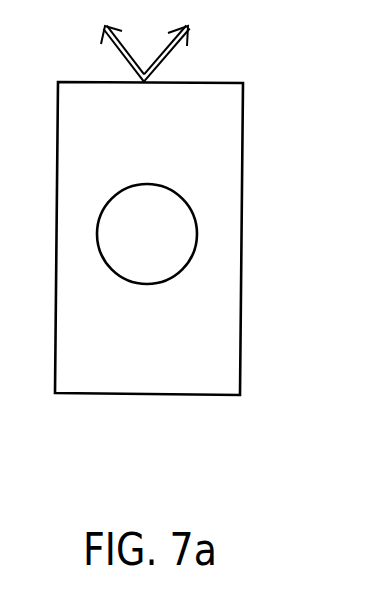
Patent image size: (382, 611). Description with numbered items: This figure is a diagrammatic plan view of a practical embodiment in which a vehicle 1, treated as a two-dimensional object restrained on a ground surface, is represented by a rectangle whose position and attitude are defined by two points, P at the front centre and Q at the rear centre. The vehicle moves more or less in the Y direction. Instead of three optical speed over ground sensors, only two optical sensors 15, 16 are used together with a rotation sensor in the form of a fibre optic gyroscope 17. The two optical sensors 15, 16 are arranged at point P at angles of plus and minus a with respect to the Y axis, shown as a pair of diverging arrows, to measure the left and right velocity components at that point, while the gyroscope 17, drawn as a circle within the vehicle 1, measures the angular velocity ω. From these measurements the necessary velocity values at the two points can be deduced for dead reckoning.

The vehicle 1 is at (243, 221).
The optical speed over ground sensor 15 is at (113, 45).
The optical speed over ground sensor 16 is at (178, 59).
The fibre optic gyroscope 17 is at (185, 268).